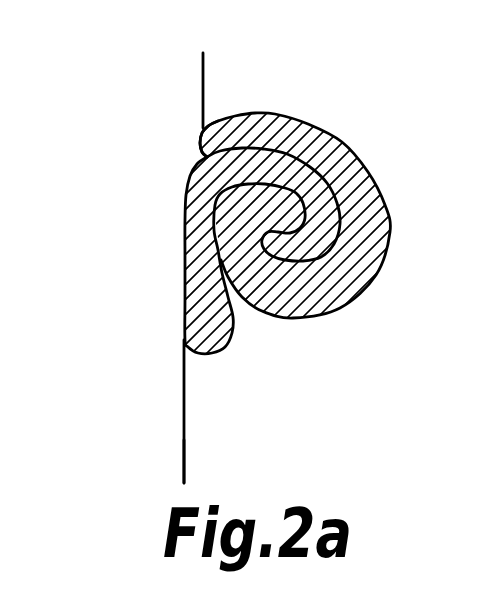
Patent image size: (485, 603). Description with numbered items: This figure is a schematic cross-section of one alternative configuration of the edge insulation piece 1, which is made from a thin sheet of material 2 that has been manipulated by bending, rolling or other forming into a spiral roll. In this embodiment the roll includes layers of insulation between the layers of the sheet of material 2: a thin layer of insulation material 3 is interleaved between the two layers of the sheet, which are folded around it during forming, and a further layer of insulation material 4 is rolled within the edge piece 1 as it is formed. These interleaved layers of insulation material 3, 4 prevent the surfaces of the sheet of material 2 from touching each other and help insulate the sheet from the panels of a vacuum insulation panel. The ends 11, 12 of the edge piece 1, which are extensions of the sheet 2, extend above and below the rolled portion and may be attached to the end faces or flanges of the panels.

The edge insulation piece 1 is at (140, 194).
The thin sheet of material 2 is at (181, 397).
The layer of insulation material 3 is at (197, 308).
The further layer of insulation material 4 is at (210, 150).
The end of the edge piece 11 is at (203, 72).
The end of the edge piece 12 is at (182, 465).